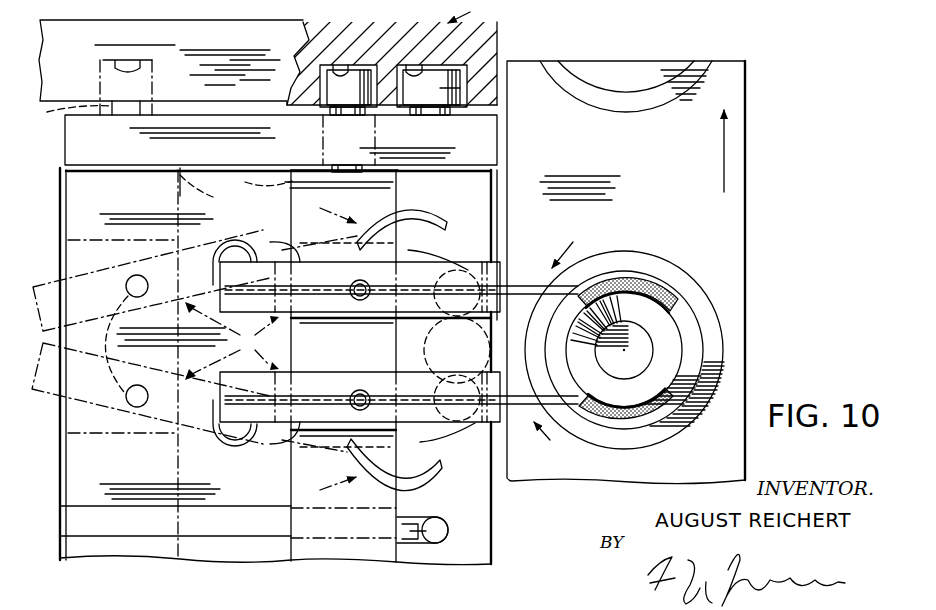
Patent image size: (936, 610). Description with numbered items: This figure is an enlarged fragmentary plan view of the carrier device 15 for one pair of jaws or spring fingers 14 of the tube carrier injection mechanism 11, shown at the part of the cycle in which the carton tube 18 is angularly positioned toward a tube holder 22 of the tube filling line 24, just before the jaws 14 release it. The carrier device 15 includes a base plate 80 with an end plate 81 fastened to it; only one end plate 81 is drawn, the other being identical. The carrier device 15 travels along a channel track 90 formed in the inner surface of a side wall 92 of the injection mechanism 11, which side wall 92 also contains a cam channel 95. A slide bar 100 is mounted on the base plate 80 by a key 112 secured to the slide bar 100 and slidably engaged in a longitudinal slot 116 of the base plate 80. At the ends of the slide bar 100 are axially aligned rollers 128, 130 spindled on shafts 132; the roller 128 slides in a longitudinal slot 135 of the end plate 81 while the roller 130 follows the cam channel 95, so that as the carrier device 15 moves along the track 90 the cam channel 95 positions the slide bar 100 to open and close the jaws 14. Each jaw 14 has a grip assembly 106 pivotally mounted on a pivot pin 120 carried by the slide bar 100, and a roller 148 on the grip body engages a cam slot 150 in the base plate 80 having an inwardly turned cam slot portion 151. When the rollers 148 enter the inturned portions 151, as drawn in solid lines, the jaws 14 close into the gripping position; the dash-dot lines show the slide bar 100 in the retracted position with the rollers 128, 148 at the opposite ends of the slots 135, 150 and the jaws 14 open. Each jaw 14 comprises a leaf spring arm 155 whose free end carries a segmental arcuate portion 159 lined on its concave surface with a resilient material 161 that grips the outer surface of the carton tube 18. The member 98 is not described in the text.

The tube carrier injection mechanism 11 is at (471, 11).
The jaws or spring fingers 14 is at (439, 351).
The carrier device 15 is at (496, 506).
The carton tube 18 is at (672, 347).
The tube holder 22 is at (690, 304).
The tube filling line 24 is at (730, 213).
The base plate 80 is at (473, 540).
The end plate 81 is at (480, 145).
The channel track 90 is at (405, 70).
The side wall 92 is at (220, 32).
The cam channel 95 is at (333, 70).
The cover plate 98 is at (497, 55).
The slide bar 100 is at (236, 195).
The grip assembly 106 is at (232, 341).
The key 112 is at (418, 534).
The longitudinal slot 116 is at (434, 517).
The pivot pin 120 is at (104, 362).
The roller 128 is at (150, 153).
The roller 130 is at (110, 88).
The shaft 132 is at (70, 111).
The longitudinal slot 135 is at (72, 145).
The roller 148 is at (258, 258).
The cam slot 150 is at (412, 256).
The inwardly turned cam slot portion 151 is at (457, 342).
The leaf spring portion or arm 155 is at (318, 300).
The segmental arcuate portion 159 is at (620, 276).
The resilient material 161 is at (672, 318).